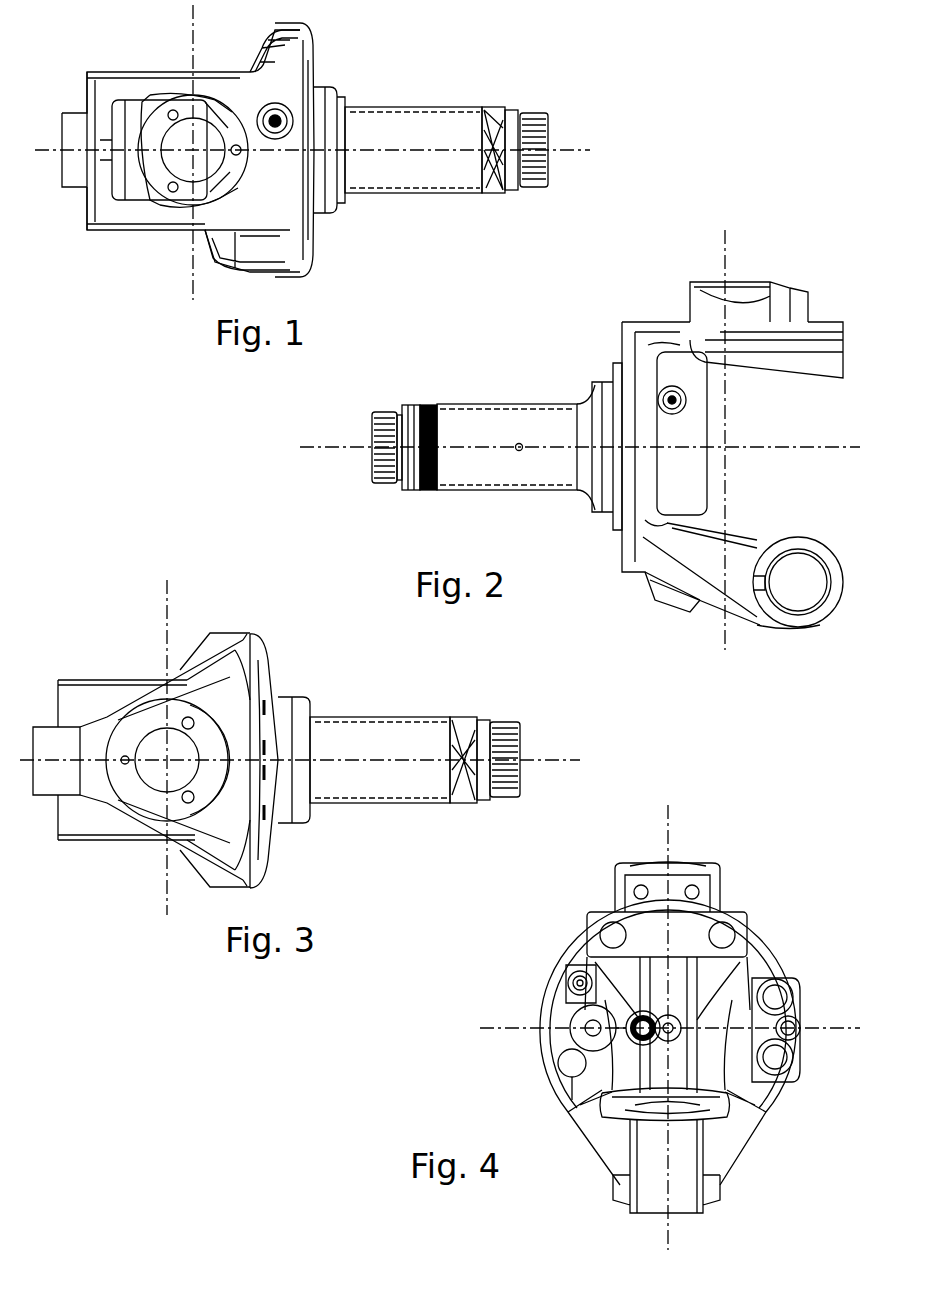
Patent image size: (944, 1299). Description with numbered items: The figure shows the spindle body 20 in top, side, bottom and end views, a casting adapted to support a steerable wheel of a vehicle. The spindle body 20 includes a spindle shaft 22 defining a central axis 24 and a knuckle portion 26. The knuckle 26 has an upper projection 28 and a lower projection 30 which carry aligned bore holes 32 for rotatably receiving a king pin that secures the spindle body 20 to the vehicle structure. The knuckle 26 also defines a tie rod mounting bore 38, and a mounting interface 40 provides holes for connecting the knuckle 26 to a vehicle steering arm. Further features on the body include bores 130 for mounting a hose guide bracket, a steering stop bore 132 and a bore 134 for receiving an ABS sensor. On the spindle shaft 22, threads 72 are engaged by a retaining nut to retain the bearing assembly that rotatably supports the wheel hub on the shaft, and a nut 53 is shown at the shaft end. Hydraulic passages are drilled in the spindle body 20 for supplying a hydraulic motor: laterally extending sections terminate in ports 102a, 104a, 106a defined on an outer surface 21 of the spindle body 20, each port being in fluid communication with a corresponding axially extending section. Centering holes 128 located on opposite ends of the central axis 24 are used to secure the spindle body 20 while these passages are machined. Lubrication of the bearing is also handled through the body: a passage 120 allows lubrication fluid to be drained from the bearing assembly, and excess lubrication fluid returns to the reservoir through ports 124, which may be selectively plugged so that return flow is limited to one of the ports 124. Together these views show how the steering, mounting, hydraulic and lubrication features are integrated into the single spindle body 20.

In FIG. 1, the spindle body 20 is at (384, 78).
In FIG. 2, the spindle body 20 is at (550, 345).
In FIG. 3, the spindle body 20 is at (355, 696).
In FIG. 4, the spindle body 20 is at (540, 1099).
In FIG. 3, the outer surface 21 is at (226, 632).
In FIG. 4, the outer surface 21 is at (800, 952).
In FIG. 1, the spindle shaft 22 is at (403, 185).
In FIG. 2, the spindle shaft 22 is at (528, 488).
In FIG. 3, the spindle shaft 22 is at (390, 802).
In FIG. 1, the central axis 24 is at (590, 150).
In FIG. 2, the central axis 24 is at (318, 450).
In FIG. 3, the central axis 24 is at (565, 760).
In FIG. 1, the knuckle portion 26 is at (162, 68).
In FIG. 2, the knuckle portion 26 is at (627, 560).
In FIG. 3, the knuckle portion 26 is at (140, 842).
In FIG. 4, the knuckle portion 26 is at (597, 910).
In FIG. 1, the upper projection 28 is at (150, 125).
In FIG. 2, the upper projection 28 is at (770, 290).
In FIG. 4, the upper projection 28 is at (735, 886).
In FIG. 2, the lower projection 30 is at (745, 540).
In FIG. 3, the lower projection 30 is at (150, 715).
In FIG. 4, the lower projection 30 is at (612, 1120).
In FIG. 1, the bore holes 32 is at (165, 178).
In FIG. 3, the bore holes 32 is at (150, 745).
In FIG. 4, the bore holes 32 is at (706, 1132).
In FIG. 2, the tie rod mounting bore 38 is at (810, 545).
In FIG. 2, the mounting interface 40 is at (843, 380).
In FIG. 4, the mounting interface 40 is at (735, 930).
In FIG. 1, the splined nut 53 is at (535, 112).
In FIG. 2, the splined nut 53 is at (385, 410).
In FIG. 3, the splined nut 53 is at (508, 720).
In FIG. 1, the threads 72 is at (490, 106).
In FIG. 2, the threads 72 is at (425, 404).
In FIG. 3, the threads 72 is at (462, 805).
In FIG. 4, the port 102a is at (790, 992).
In FIG. 4, the port 104a is at (788, 1072).
In FIG. 4, the port 106a is at (799, 1033).
In FIG. 2, the passage 120 is at (515, 450).
In FIG. 1, the ports 124 is at (262, 108).
In FIG. 2, the ports 124 is at (690, 403).
In FIG. 4, the ports 124 is at (575, 972).
In FIG. 4, the centering holes 128 is at (722, 1102).
In FIG. 4, the bores 130 is at (632, 868).
In FIG. 4, the steering stop bore 132 is at (586, 1028).
In FIG. 4, the bore 134 is at (560, 1055).